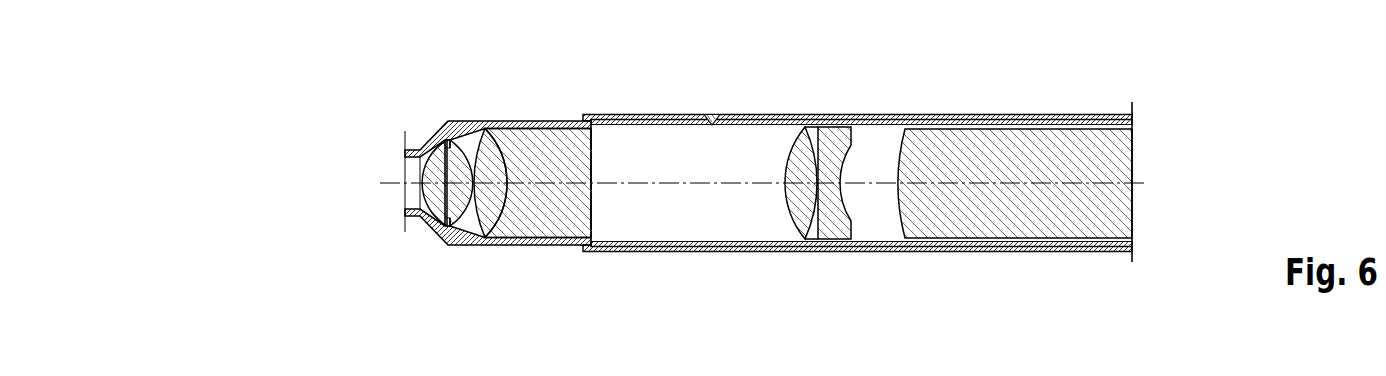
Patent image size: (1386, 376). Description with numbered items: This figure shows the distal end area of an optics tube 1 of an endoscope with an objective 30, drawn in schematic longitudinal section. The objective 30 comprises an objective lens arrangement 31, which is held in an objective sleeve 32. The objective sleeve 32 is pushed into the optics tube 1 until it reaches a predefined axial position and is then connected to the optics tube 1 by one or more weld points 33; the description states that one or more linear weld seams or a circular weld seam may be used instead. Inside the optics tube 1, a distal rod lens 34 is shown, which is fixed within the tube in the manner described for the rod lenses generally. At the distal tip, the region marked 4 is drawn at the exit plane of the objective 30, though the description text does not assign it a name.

The optics tube 1 is at (887, 114).
The exit window plane 4 is at (385, 183).
The objective 30 is at (676, 214).
The objective lens arrangement 31 is at (464, 241).
The objective sleeve 32 is at (659, 114).
The weld point 33 is at (712, 40).
The distal rod lens 34 is at (1033, 118).